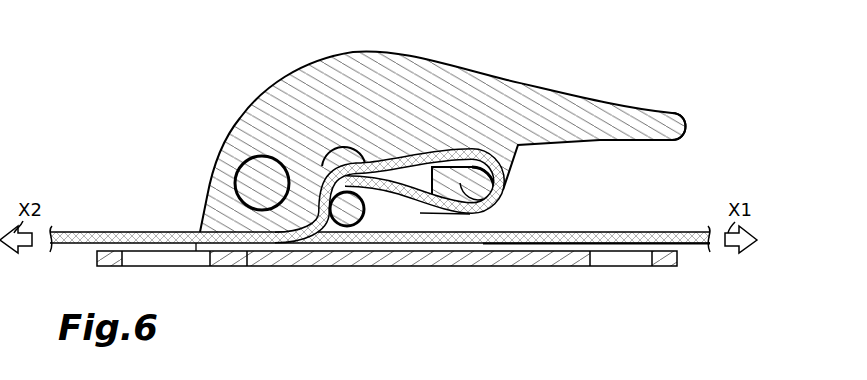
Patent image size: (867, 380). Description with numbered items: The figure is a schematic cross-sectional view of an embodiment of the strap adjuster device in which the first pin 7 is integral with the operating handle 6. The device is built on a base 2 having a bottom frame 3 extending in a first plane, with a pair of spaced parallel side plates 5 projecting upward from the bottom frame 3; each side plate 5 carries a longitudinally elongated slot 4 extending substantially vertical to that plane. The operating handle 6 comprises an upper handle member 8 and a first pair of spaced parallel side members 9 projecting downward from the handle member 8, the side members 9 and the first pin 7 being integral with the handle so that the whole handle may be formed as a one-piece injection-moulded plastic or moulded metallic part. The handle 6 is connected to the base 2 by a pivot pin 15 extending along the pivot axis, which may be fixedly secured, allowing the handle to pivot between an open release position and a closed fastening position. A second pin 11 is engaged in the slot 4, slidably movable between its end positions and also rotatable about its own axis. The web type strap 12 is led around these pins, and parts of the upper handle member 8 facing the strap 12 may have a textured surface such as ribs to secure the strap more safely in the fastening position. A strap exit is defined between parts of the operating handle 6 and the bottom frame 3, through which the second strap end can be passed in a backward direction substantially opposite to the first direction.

The base 2 is at (182, 224).
The bottom frame 3 is at (513, 263).
The longitudinally elongated slot 4 is at (358, 151).
The side plate 5 is at (394, 208).
The operating handle 6 is at (212, 119).
The first pin 7 is at (497, 199).
The upper handle member 8 is at (633, 128).
The first pair of spaced parallel side members 9 is at (427, 216).
The second pin 11 is at (346, 222).
The web type strap 12 is at (594, 240).
The pivot pin 15 is at (262, 172).